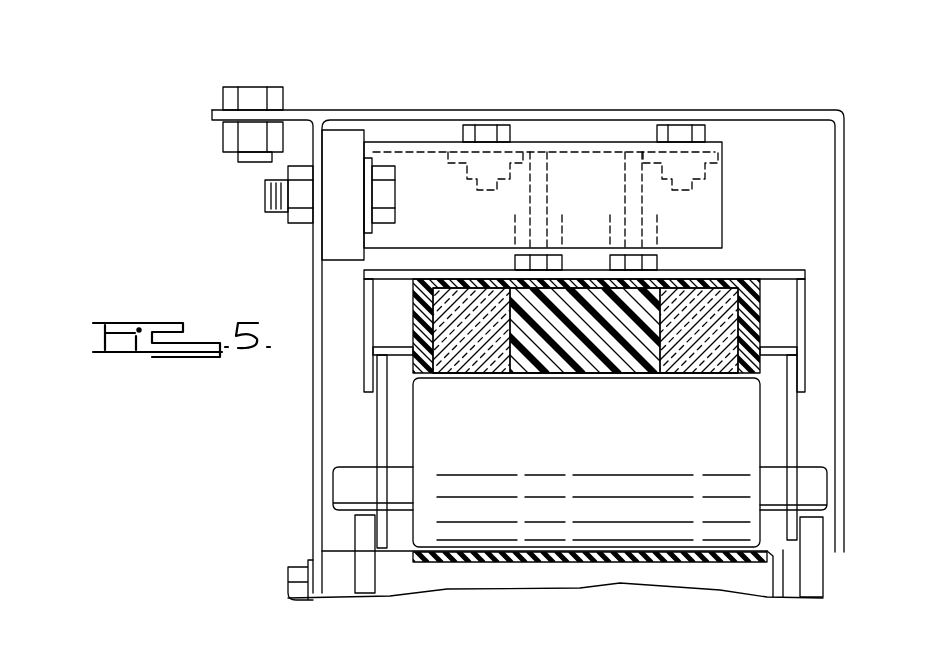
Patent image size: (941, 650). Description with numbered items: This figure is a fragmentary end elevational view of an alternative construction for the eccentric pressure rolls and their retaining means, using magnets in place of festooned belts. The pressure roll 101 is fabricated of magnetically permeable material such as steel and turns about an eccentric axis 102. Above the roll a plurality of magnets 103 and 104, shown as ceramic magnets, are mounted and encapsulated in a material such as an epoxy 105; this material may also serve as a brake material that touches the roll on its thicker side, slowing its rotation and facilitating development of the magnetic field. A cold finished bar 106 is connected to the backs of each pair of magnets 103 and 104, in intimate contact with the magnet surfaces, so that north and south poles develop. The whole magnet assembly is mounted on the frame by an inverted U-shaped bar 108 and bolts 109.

The pressure roll 101 is at (743, 437).
The eccentric axis 102 is at (343, 478).
The magnet 103 is at (453, 303).
The magnet 104 is at (720, 278).
The epoxy 105 is at (758, 305).
The cold finished bar 106 is at (573, 282).
The inverted U-shaped bar 108 is at (773, 270).
The bolts 109 is at (628, 256).